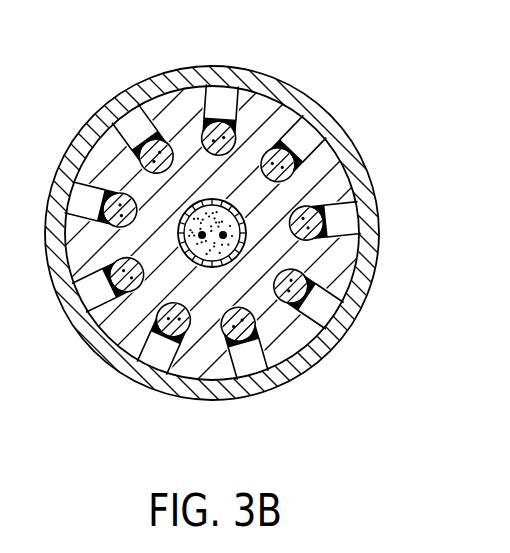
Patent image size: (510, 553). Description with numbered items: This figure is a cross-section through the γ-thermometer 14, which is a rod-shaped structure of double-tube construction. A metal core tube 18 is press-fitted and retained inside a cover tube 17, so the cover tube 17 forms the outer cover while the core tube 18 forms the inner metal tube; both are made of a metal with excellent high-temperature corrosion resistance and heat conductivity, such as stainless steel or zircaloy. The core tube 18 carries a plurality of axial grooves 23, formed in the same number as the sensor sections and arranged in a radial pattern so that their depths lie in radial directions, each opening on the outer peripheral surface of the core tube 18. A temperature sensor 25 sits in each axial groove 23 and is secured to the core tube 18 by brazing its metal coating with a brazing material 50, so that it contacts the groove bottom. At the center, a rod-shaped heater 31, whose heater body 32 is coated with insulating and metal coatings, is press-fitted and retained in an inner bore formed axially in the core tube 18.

The γ-thermometer 14 is at (279, 79).
The cover tube 17 is at (268, 382).
The core tube 18 is at (338, 270).
The axial grooves 23 is at (252, 207).
The temperature sensor 25 is at (138, 154).
The heater 31 is at (245, 219).
The heater body 32 is at (223, 240).
The brazing material 50 is at (356, 219).